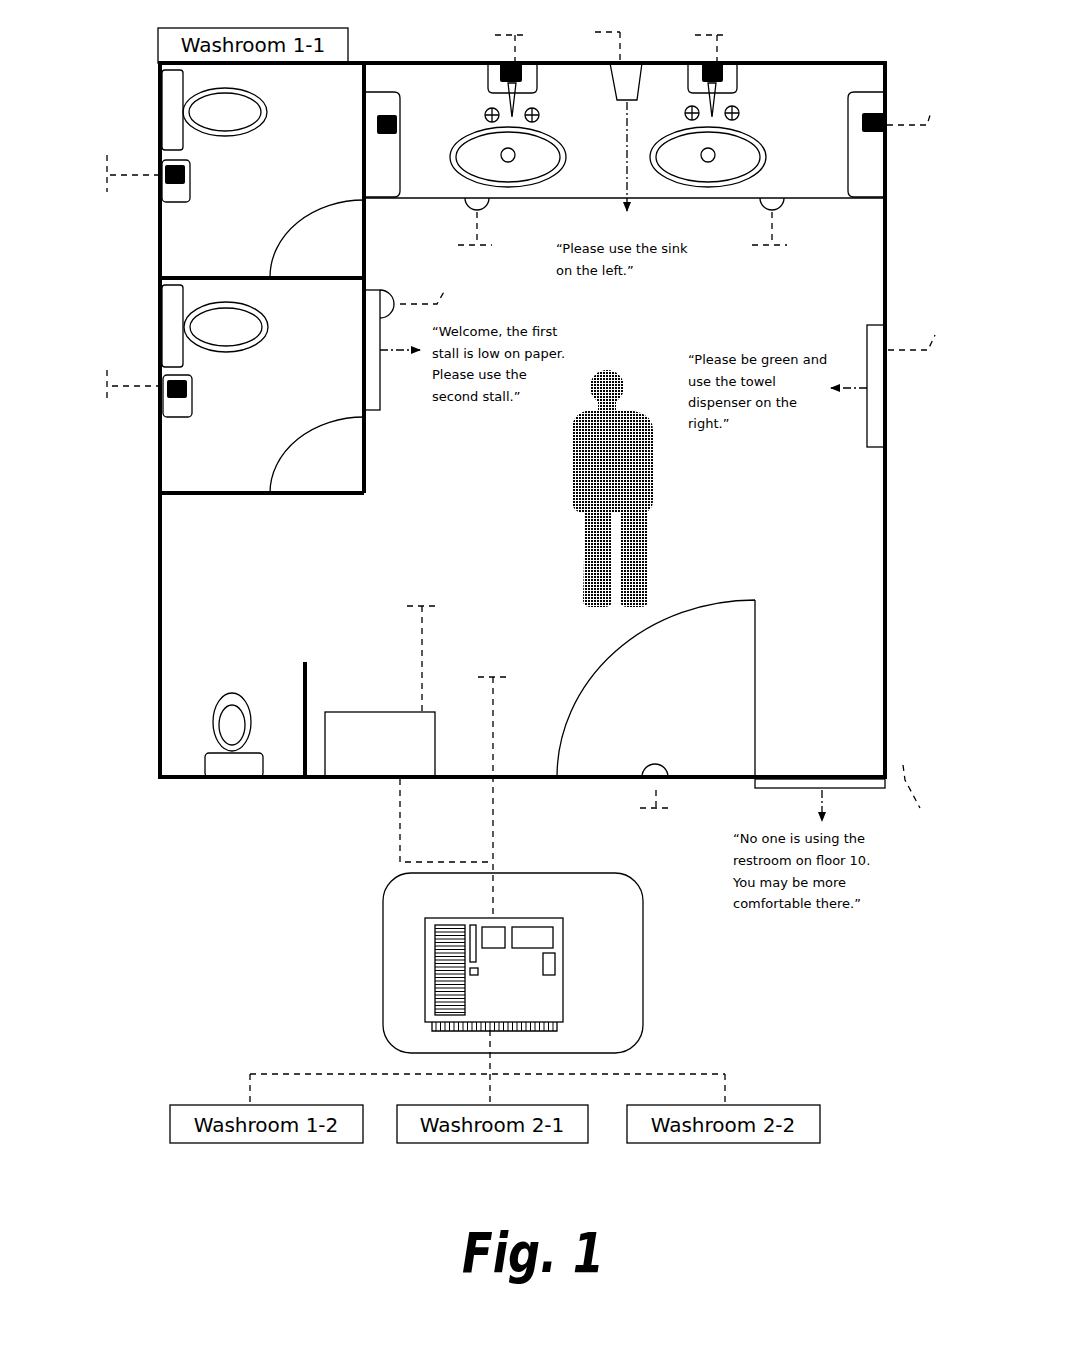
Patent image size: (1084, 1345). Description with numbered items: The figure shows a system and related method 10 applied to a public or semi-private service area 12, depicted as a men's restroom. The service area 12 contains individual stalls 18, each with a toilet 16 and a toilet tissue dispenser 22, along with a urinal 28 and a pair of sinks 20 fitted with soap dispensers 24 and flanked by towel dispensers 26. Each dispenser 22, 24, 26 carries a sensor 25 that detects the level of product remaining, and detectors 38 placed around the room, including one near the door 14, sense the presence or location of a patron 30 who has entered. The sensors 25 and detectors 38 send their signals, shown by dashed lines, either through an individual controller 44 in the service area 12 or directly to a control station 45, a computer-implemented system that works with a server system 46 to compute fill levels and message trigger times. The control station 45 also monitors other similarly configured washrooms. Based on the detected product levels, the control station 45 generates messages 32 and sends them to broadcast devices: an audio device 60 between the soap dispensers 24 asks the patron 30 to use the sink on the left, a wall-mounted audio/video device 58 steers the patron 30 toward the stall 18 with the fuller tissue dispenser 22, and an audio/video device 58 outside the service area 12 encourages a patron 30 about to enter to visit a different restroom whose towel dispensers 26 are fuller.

The system and related method 10 is at (133, 46).
The service area 12 is at (893, 509).
The door 14 is at (757, 713).
The toilet 16 is at (267, 118).
The stall 18 is at (225, 495).
The sink 20 is at (566, 165).
The toilet tissue dispenser 22 is at (190, 188).
The soap dispenser 24 is at (537, 88).
The sensor 25 is at (190, 170).
The towel dispenser 26 is at (385, 198).
The urinal 28 is at (251, 725).
The patron 30 is at (592, 470).
The message 32 is at (596, 337).
The detector 38 is at (397, 297).
The controller 44 is at (345, 712).
The control station 45 is at (643, 955).
The server system 46 is at (563, 967).
The audio/video device 58 is at (383, 404).
The audio device 60 is at (632, 62).